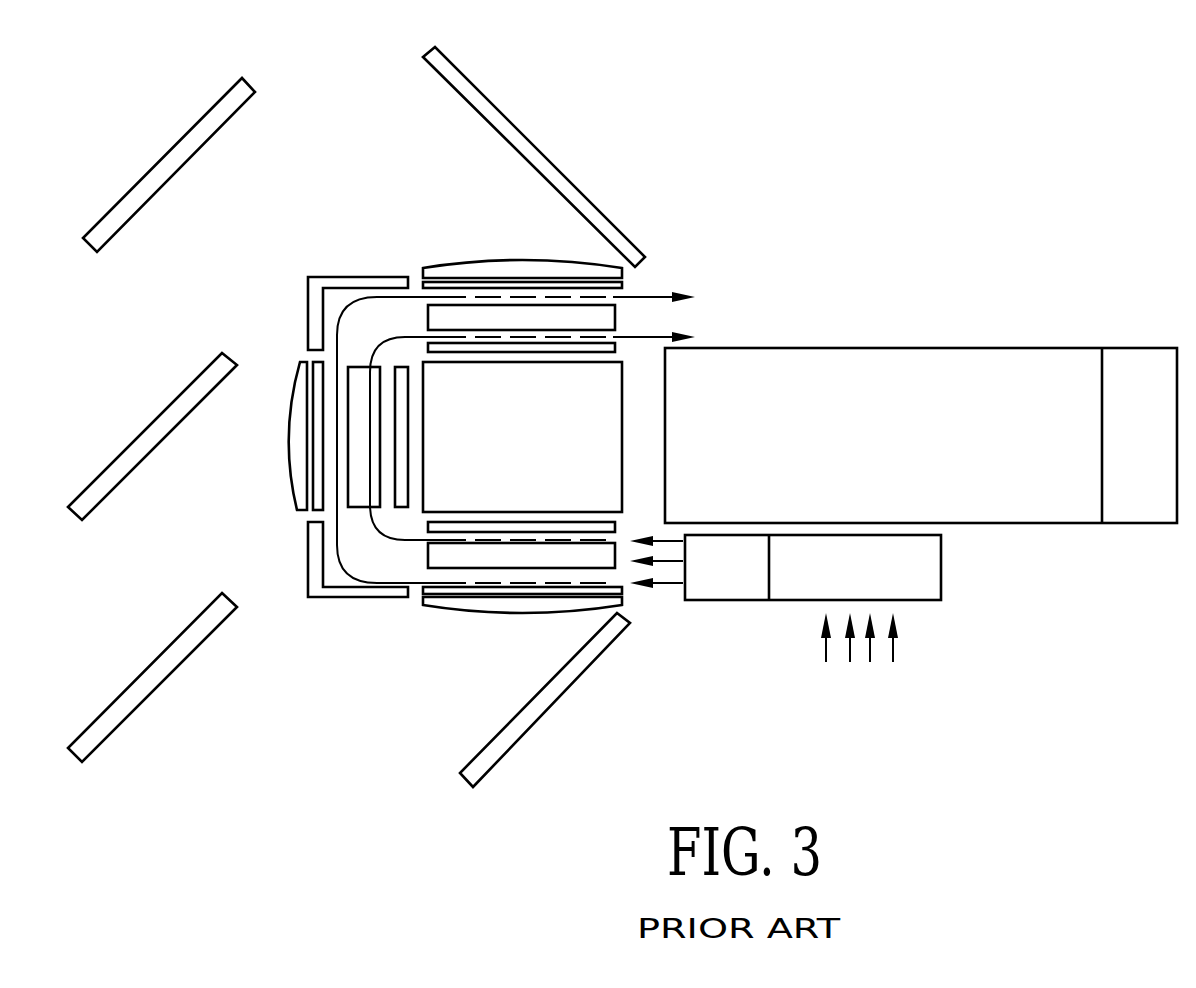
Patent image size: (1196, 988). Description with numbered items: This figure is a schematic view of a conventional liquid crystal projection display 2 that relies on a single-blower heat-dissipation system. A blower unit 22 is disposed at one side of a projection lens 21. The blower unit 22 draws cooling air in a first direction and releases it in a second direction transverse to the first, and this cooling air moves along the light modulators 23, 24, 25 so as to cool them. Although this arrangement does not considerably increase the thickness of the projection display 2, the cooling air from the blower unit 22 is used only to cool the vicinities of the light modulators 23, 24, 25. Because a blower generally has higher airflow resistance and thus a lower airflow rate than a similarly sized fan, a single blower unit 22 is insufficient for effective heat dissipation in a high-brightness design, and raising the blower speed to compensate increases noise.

The liquid crystal projection display 2 is at (808, 183).
The projection lens 21 is at (1003, 365).
The blower unit 22 is at (915, 567).
The light modulator 23 is at (474, 618).
The light modulator 24 is at (358, 520).
The light modulator 25 is at (630, 312).